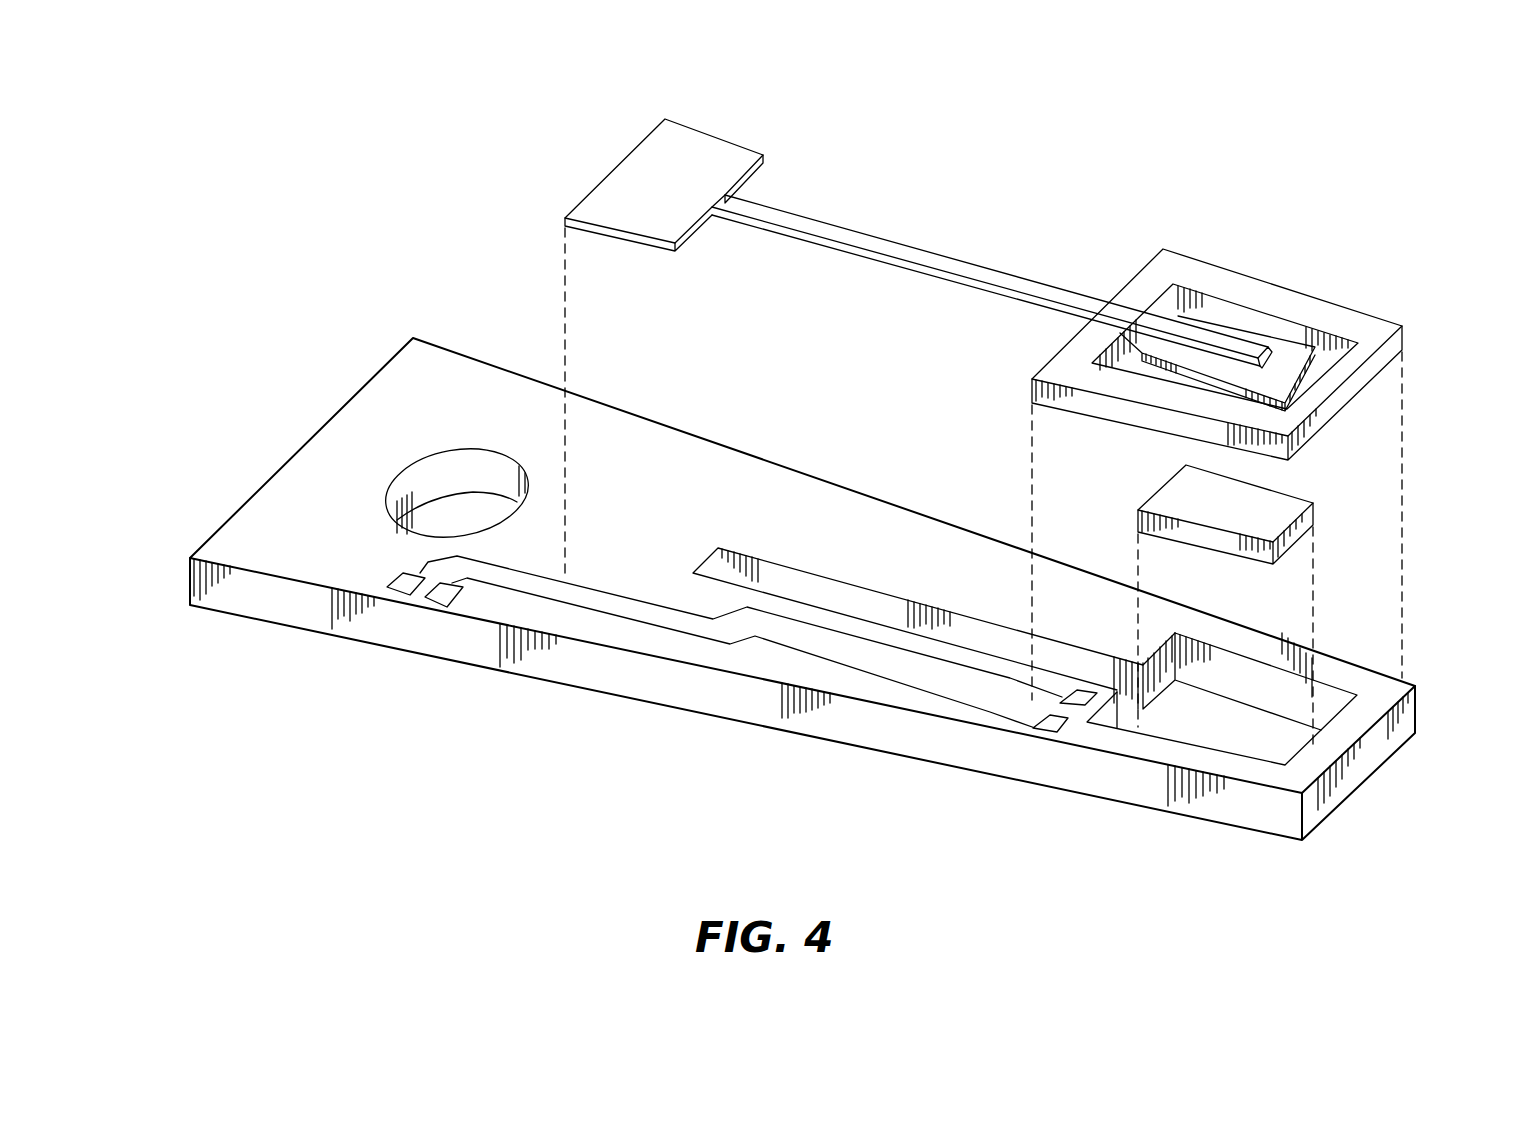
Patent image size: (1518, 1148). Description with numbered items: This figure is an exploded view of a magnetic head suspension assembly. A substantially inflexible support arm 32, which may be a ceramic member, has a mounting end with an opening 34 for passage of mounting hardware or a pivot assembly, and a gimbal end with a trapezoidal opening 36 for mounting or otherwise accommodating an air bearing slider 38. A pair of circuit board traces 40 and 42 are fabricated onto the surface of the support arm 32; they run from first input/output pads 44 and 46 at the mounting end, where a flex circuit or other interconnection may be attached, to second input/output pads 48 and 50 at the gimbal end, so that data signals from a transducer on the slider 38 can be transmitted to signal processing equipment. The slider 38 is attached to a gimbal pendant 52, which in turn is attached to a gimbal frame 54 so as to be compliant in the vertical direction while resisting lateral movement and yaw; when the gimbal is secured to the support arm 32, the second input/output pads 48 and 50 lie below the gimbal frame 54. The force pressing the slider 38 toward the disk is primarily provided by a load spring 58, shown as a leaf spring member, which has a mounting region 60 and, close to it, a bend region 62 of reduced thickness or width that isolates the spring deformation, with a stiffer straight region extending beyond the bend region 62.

The support arm 32 is at (295, 552).
The opening 34 is at (437, 477).
The trapezoidal opening 36 is at (1327, 695).
The air bearing slider 38 is at (1307, 520).
The circuit board trace 40 is at (592, 617).
The circuit board trace 42 is at (608, 592).
The first input/output pad 44 is at (403, 583).
The first input/output pad 46 is at (438, 598).
The second input/output pad 48 is at (1035, 740).
The second input/output pad 50 is at (1077, 702).
The gimbal pendant 52 is at (1290, 348).
The gimbal frame 54 is at (1278, 298).
The load spring 58 is at (1055, 290).
The mounting region 60 is at (707, 148).
The bend region 62 is at (835, 232).